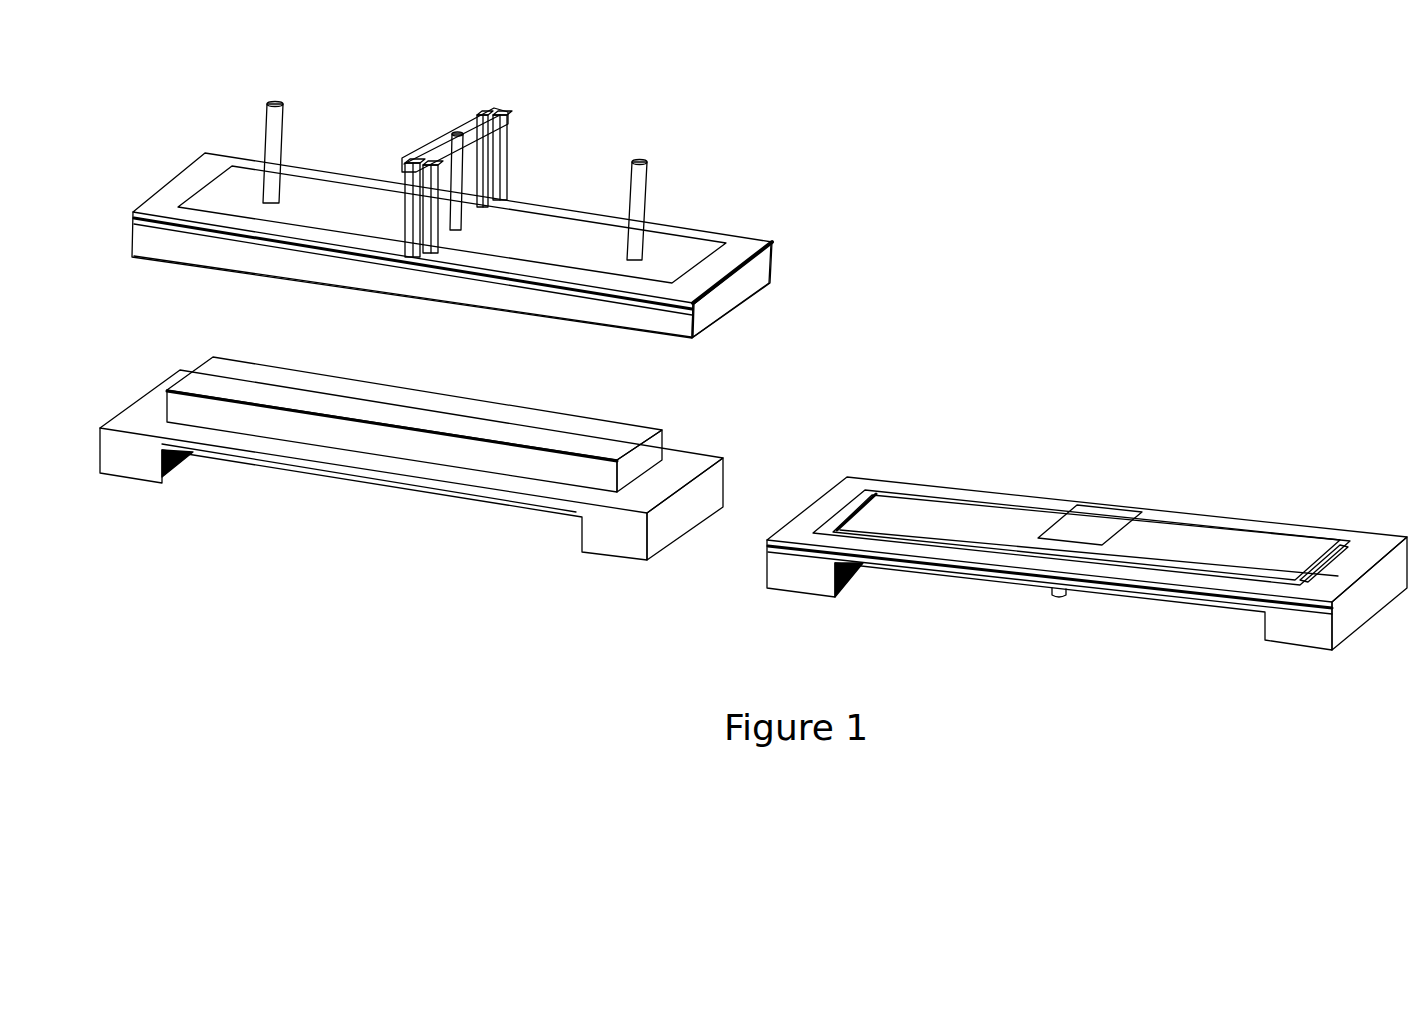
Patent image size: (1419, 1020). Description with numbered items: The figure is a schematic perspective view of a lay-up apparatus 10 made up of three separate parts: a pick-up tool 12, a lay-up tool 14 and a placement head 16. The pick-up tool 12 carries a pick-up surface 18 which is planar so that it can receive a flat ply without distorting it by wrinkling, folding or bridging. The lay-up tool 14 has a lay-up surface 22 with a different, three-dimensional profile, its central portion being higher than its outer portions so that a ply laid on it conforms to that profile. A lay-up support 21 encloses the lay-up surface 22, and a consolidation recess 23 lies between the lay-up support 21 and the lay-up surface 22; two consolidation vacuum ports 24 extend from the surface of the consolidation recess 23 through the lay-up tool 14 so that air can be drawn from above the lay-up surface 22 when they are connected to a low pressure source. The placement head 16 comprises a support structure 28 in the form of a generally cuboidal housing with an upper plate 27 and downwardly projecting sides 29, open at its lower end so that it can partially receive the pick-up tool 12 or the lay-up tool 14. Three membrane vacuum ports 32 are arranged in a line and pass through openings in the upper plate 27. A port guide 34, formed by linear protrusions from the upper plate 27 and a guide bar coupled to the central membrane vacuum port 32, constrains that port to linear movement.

The lay-up apparatus 10 is at (948, 198).
The pick-up tool 12 is at (600, 533).
The lay-up tool 14 is at (790, 570).
The placement head 16 is at (338, 168).
The pick-up surface 18 is at (217, 375).
The lay-up support 21 is at (837, 493).
The lay-up surface 22 is at (1192, 522).
The consolidation recess 23 is at (1332, 563).
The consolidation vacuum ports 24 is at (1063, 593).
The upper plate 27 is at (548, 232).
The support structure 28 is at (775, 268).
The sides 29 is at (613, 310).
The membrane vacuum ports 32 is at (267, 120).
The port guide 34 is at (508, 122).